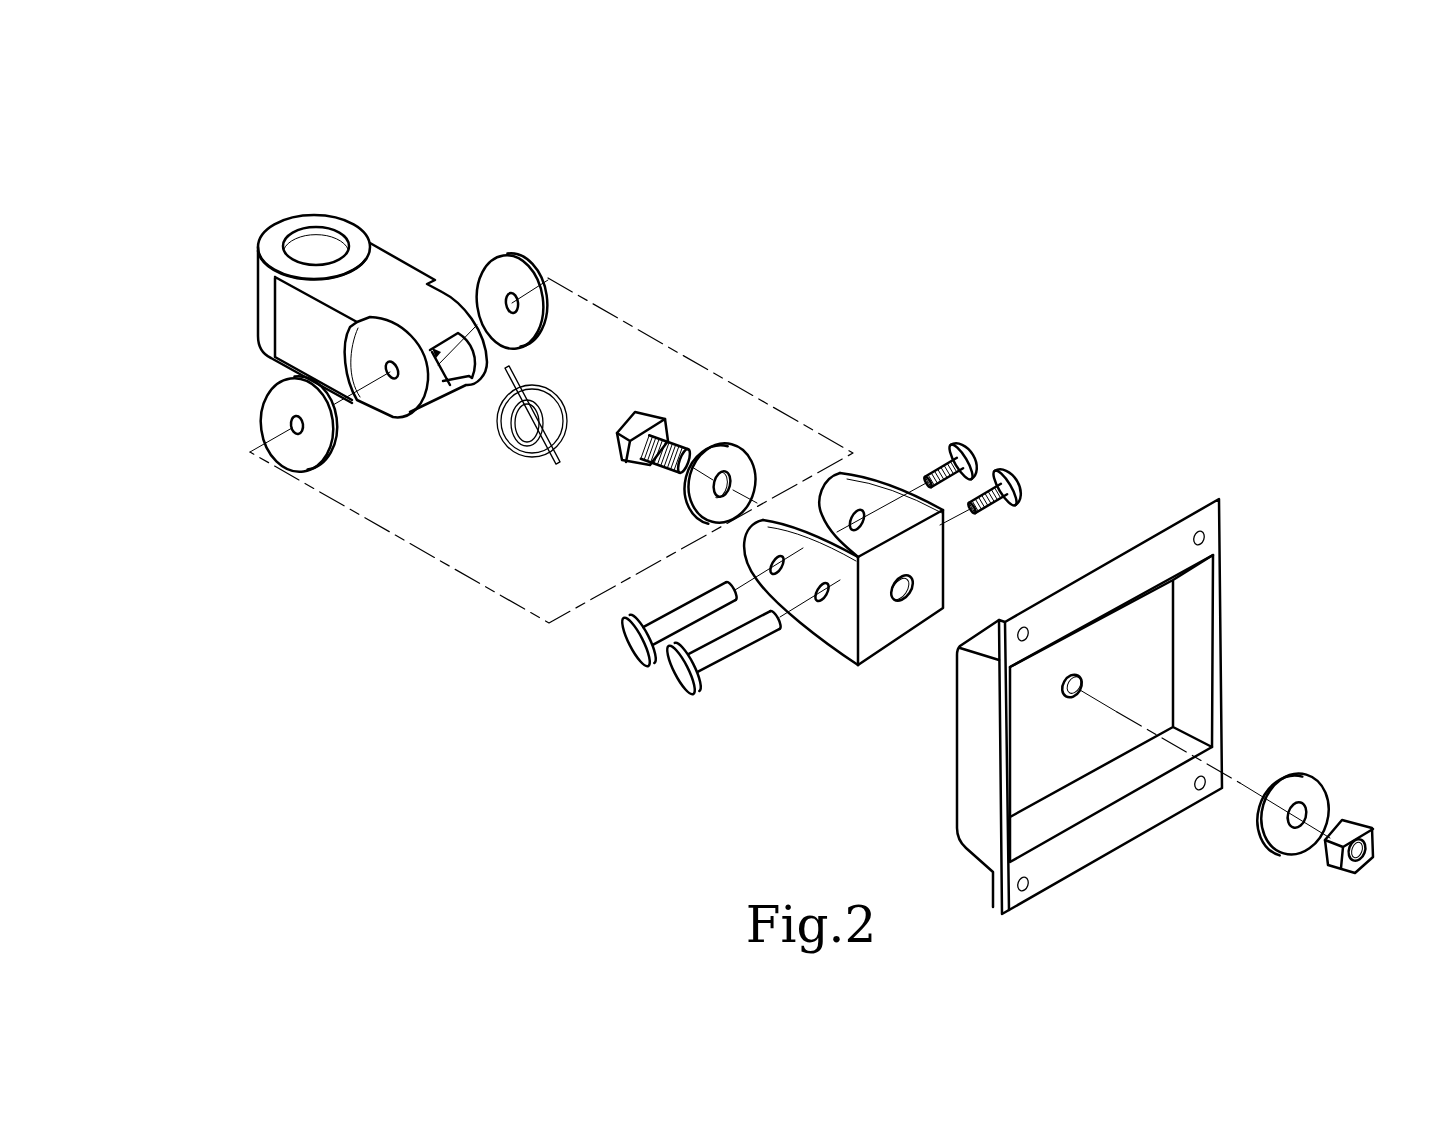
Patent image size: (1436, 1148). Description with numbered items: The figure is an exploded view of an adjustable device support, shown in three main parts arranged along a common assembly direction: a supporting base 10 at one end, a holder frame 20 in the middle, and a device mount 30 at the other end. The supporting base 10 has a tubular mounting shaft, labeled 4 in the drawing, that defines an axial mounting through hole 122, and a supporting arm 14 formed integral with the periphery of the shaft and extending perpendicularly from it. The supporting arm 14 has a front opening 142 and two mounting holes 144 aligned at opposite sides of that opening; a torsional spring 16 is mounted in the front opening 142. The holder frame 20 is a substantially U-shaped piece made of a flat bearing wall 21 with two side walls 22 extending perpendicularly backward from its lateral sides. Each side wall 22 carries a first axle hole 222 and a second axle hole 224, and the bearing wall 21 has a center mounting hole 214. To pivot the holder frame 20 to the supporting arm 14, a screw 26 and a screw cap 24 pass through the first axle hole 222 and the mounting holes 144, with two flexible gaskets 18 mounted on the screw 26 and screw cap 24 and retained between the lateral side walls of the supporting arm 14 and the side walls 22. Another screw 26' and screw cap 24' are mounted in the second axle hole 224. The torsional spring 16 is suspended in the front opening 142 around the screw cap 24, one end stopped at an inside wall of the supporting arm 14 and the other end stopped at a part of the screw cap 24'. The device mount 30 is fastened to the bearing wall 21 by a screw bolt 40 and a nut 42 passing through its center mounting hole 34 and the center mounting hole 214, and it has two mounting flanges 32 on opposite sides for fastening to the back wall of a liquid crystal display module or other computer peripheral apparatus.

The supporting base 10 is at (398, 205).
The tube 4 is at (260, 288).
The axial mounting through hole 122 is at (313, 240).
The supporting arm 14 is at (445, 302).
The front opening 142 is at (468, 378).
The mounting holes 144 is at (390, 380).
The flexible gaskets 18 is at (262, 418).
The torsional spring 16 is at (558, 403).
The screw bolt 40 is at (648, 412).
The holder frame 20 is at (847, 398).
The flat bearing wall 21 is at (940, 578).
The side walls 22 is at (863, 480).
The first axle hole 222 is at (775, 565).
The second axle hole 224 is at (821, 600).
The center mounting hole 214 is at (900, 598).
The screw cap 24 is at (660, 649).
The screw cap 24' is at (711, 674).
The screw 26 is at (962, 439).
The screw 26' is at (1015, 468).
The device mount 30 is at (1262, 601).
The mounting flanges 32 is at (1184, 508).
The center mounting hole 34 is at (1082, 682).
The nut 42 is at (1354, 822).